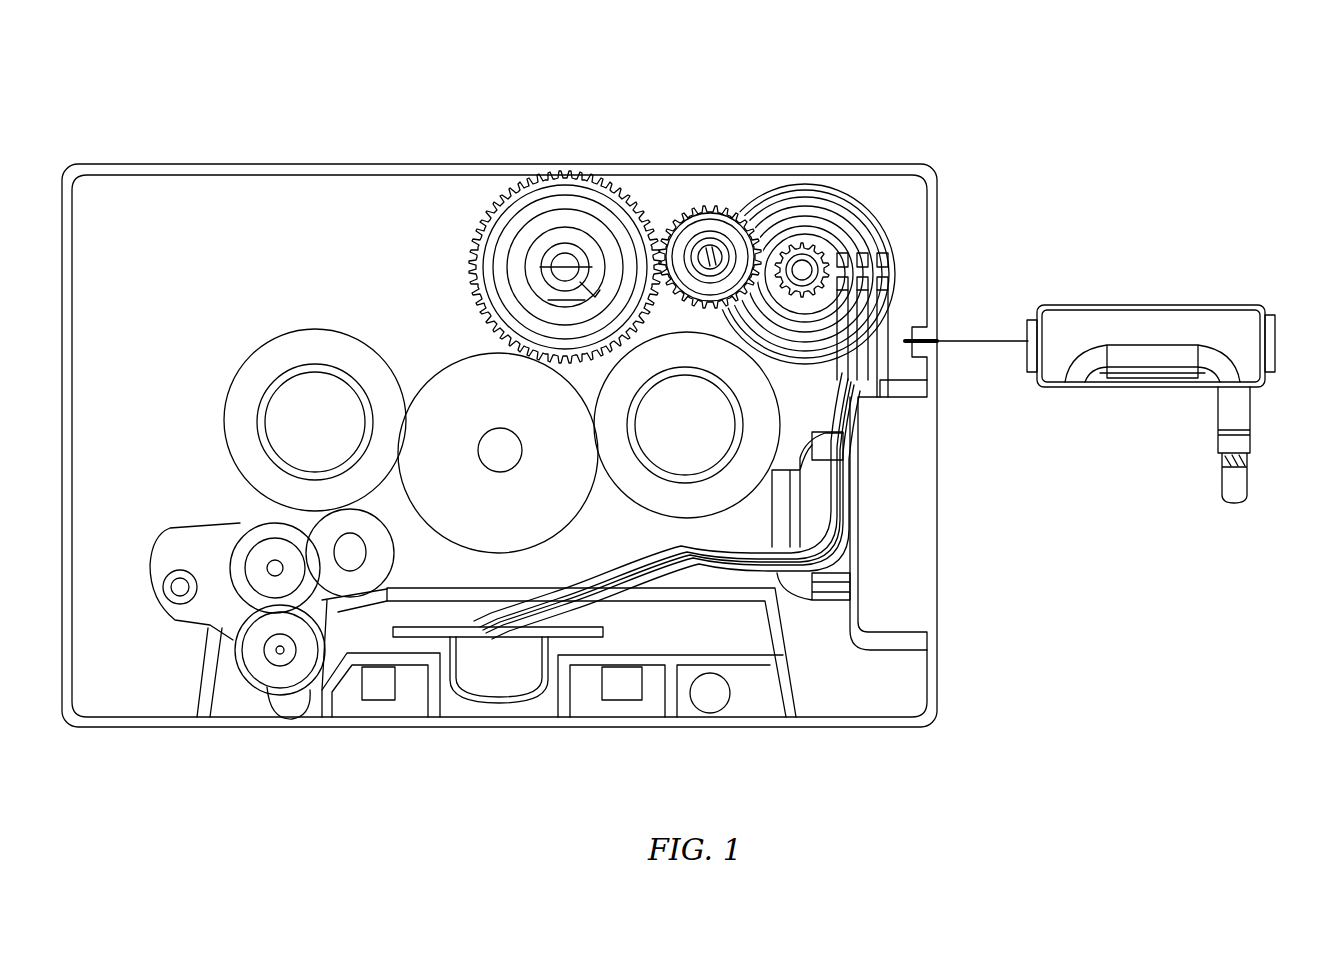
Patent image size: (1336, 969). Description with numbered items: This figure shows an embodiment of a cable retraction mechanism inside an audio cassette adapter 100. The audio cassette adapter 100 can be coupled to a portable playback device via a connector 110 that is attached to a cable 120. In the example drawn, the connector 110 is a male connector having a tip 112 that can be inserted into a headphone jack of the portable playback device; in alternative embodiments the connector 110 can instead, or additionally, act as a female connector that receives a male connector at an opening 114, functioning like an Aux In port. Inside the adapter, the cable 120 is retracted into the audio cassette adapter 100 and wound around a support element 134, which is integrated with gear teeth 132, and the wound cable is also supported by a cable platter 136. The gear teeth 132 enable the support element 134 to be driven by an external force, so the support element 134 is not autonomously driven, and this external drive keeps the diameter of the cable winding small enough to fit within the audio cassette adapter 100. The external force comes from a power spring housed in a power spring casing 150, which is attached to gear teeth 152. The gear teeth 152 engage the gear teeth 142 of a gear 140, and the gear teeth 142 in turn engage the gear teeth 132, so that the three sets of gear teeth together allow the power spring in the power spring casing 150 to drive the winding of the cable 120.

The audio cassette adapter 100 is at (228, 195).
The connector 110 is at (1142, 300).
The tip 112 is at (1215, 475).
The opening 114 is at (1277, 318).
The cable 120 is at (982, 330).
The gear teeth 132 is at (800, 233).
The support element 134 is at (805, 262).
The cable platter 136 is at (852, 222).
The gear 140 is at (680, 225).
The gear teeth 142 is at (733, 197).
The power spring casing 150 is at (538, 220).
The gear teeth 152 is at (598, 180).